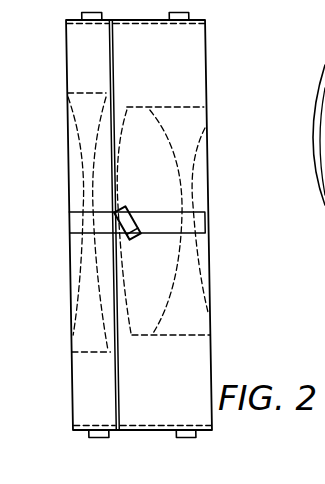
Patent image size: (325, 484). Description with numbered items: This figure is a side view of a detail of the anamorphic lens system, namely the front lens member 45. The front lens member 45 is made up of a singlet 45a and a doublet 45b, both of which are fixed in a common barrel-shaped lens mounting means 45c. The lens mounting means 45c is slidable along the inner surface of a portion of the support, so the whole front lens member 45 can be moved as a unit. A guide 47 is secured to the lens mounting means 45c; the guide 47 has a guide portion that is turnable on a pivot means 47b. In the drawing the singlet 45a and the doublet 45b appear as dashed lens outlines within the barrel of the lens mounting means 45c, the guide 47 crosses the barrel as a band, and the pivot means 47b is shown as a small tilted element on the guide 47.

The front lens member 45 is at (190, 88).
The singlet 45a is at (82, 144).
The doublet 45b is at (204, 168).
The lens mounting means 45c is at (206, 38).
The guide 47 is at (75, 223).
The pivot means 47b is at (122, 237).